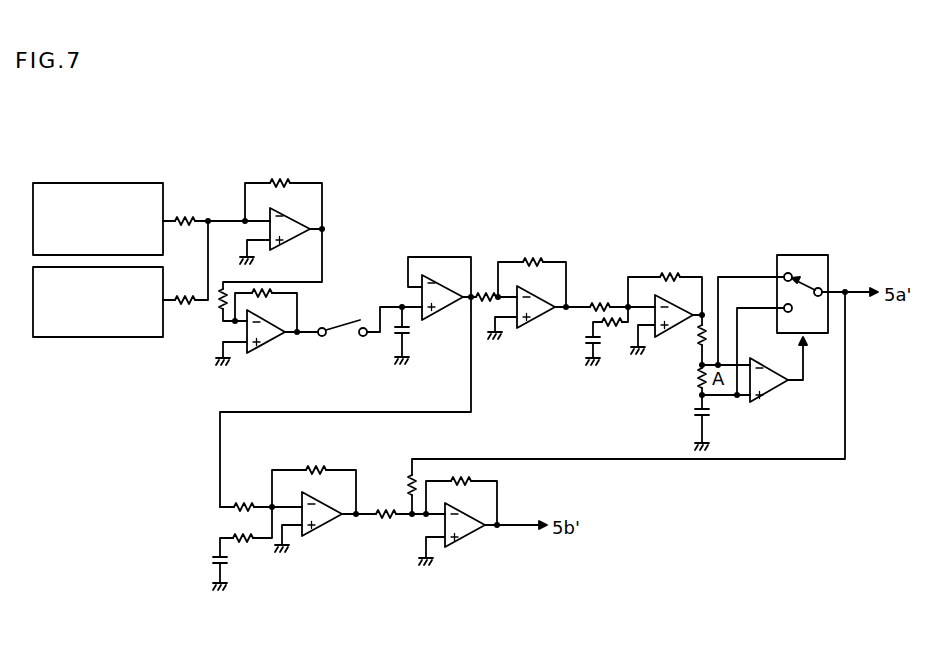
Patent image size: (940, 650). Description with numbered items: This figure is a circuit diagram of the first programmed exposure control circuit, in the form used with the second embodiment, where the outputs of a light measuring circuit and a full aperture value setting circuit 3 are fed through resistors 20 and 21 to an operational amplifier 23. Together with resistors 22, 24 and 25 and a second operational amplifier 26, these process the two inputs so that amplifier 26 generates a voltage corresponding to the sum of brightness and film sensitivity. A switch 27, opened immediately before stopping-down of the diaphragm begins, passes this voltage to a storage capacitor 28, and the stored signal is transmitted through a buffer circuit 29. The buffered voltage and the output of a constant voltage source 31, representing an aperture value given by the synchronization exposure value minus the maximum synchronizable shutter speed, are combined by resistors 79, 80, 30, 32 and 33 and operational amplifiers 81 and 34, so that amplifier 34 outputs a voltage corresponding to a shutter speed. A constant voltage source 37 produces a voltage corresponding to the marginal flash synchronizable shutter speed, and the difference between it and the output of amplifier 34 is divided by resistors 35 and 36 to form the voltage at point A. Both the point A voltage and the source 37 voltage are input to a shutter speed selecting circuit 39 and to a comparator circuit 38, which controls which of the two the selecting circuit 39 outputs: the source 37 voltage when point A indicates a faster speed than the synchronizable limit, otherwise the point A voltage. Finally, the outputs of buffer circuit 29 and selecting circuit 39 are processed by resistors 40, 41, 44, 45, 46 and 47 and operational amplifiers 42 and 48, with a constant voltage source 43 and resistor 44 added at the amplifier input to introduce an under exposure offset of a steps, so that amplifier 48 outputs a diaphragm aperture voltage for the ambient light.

The full aperture value setting circuit 3 is at (125, 337).
The resistor 20 is at (190, 219).
The resistor 21 is at (187, 297).
The resistor 22 is at (283, 180).
The operational amplifier 23 is at (293, 236).
The resistor 24 is at (220, 302).
The resistor 25 is at (262, 294).
The operational amplifier 26 is at (268, 343).
The switch 27 is at (343, 322).
The storage capacitor 28 is at (393, 334).
The buffer circuit 29 is at (447, 310).
The resistor 79 is at (483, 292).
The resistor 80 is at (533, 257).
The operational amplifier 81 is at (537, 320).
The resistor 30 is at (603, 303).
The constant voltage source 31 is at (585, 340).
The resistor 32 is at (612, 330).
The resistor 33 is at (666, 277).
The operational amplifier 34 is at (672, 330).
The resistor 35 is at (697, 340).
The resistor 36 is at (697, 382).
The constant voltage source 37 is at (697, 412).
The comparator circuit 38 is at (768, 388).
The shutter speed selecting circuit 39 is at (805, 255).
The resistor 40 is at (247, 500).
The resistor 41 is at (320, 468).
The operational amplifier 42 is at (318, 528).
The constant voltage source 43 is at (212, 560).
The resistor 44 is at (245, 547).
The resistor 45 is at (387, 511).
The resistor 46 is at (408, 477).
The resistor 47 is at (470, 478).
The operational amplifier 48 is at (464, 537).